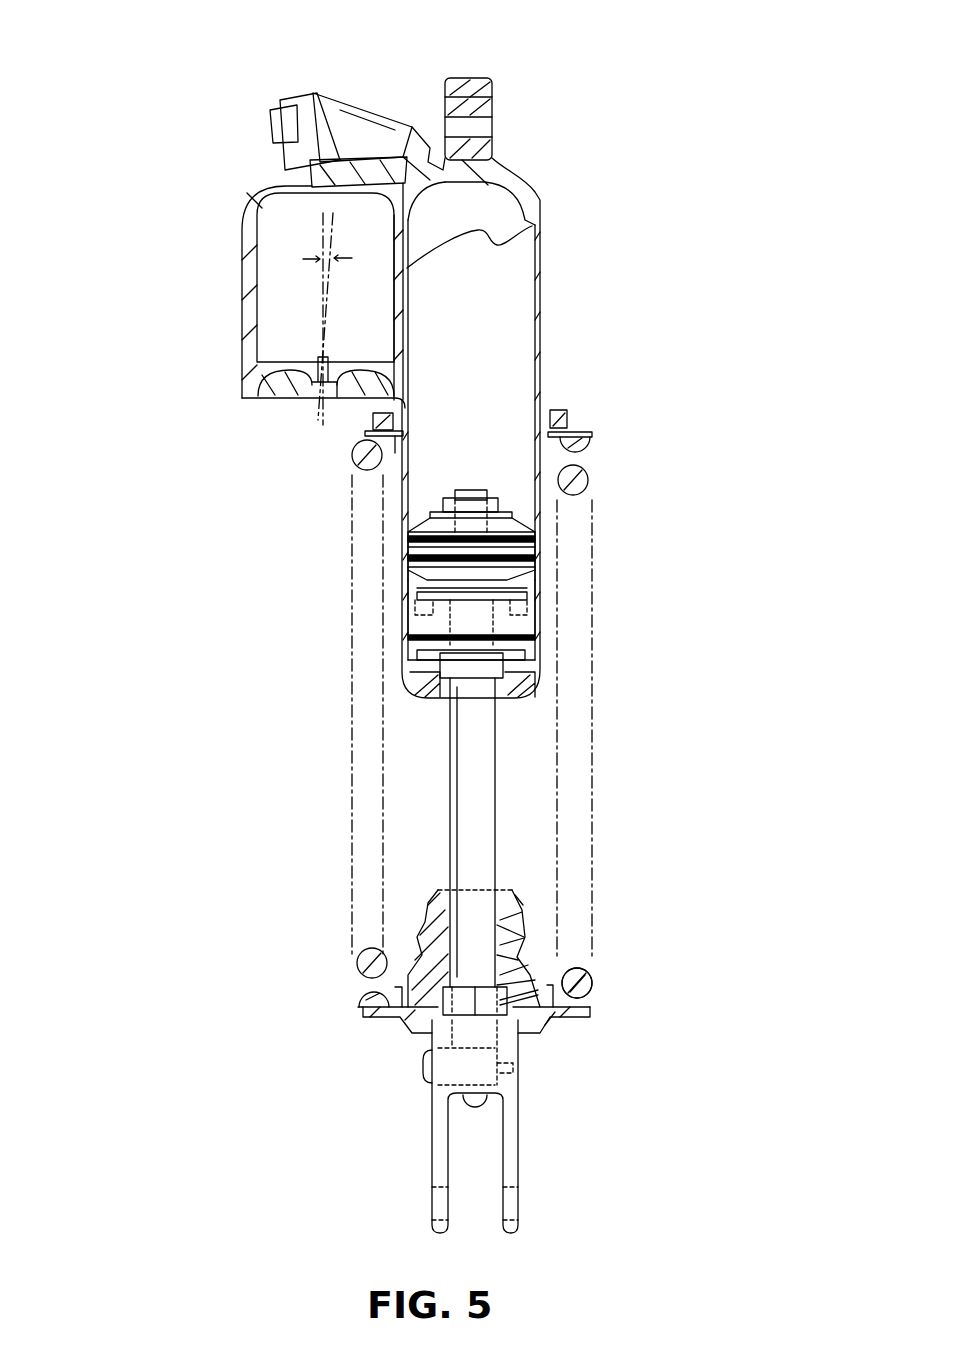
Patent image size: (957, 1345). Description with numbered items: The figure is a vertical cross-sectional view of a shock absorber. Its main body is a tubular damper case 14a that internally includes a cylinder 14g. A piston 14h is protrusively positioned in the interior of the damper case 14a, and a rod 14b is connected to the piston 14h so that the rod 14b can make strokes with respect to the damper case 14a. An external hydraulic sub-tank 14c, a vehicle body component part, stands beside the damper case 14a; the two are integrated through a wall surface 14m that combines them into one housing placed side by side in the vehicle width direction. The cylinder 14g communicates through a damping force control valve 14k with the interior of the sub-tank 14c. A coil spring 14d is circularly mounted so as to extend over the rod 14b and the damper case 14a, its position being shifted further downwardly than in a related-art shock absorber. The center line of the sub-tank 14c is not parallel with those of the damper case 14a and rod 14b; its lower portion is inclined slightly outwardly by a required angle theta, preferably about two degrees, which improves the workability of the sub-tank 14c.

The damping force control valve 14k is at (360, 150).
The sub-tank 14c is at (240, 327).
The wall surface 14m is at (405, 277).
The cylinder 14g is at (497, 298).
The damper case 14a is at (533, 355).
The piston 14h is at (522, 548).
The rod 14b is at (490, 785).
The coil spring 14d is at (575, 980).